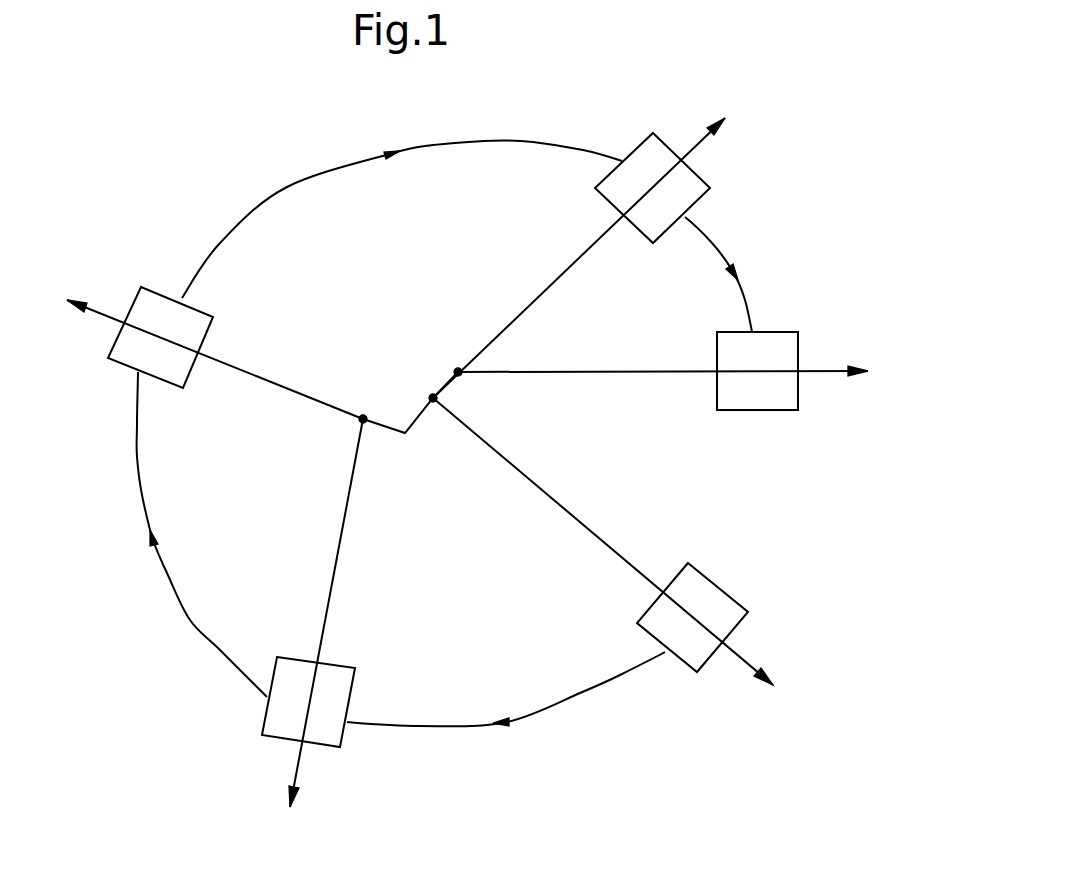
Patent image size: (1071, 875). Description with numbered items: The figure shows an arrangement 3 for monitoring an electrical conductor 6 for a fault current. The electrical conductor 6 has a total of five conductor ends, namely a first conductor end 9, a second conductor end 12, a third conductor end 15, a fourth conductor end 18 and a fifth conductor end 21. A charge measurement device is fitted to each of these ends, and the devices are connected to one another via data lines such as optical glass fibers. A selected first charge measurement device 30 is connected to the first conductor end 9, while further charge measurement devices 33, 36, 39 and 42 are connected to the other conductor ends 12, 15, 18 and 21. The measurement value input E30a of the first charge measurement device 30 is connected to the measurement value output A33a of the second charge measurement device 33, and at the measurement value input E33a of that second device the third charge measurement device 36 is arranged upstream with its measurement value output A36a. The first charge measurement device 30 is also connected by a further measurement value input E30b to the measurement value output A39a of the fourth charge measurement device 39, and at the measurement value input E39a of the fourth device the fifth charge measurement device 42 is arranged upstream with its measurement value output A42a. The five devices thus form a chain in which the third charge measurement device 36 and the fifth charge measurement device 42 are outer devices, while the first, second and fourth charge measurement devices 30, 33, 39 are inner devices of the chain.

The arrangement 3 is at (242, 208).
The electrical conductor 6 is at (411, 418).
The first conductor end 9 is at (100, 315).
The second conductor end 12 is at (692, 150).
The third conductor end 15 is at (822, 368).
The fourth conductor end 18 is at (300, 768).
The fifth conductor end 21 is at (737, 652).
The first charge measurement device 30 is at (125, 367).
The second charge measurement device 33 is at (633, 152).
The third charge measurement device 36 is at (747, 412).
The fourth charge measurement device 39 is at (263, 715).
The fifth charge measurement device 42 is at (725, 590).
The measurement value input E30a is at (182, 300).
The further measurement value input E30b is at (148, 376).
The measurement value output A33a is at (618, 161).
The measurement value input E33a is at (686, 214).
The measurement value output A36a is at (750, 331).
The measurement value output A39a is at (268, 690).
The measurement value input E39a is at (350, 712).
The measurement value output A42a is at (665, 648).